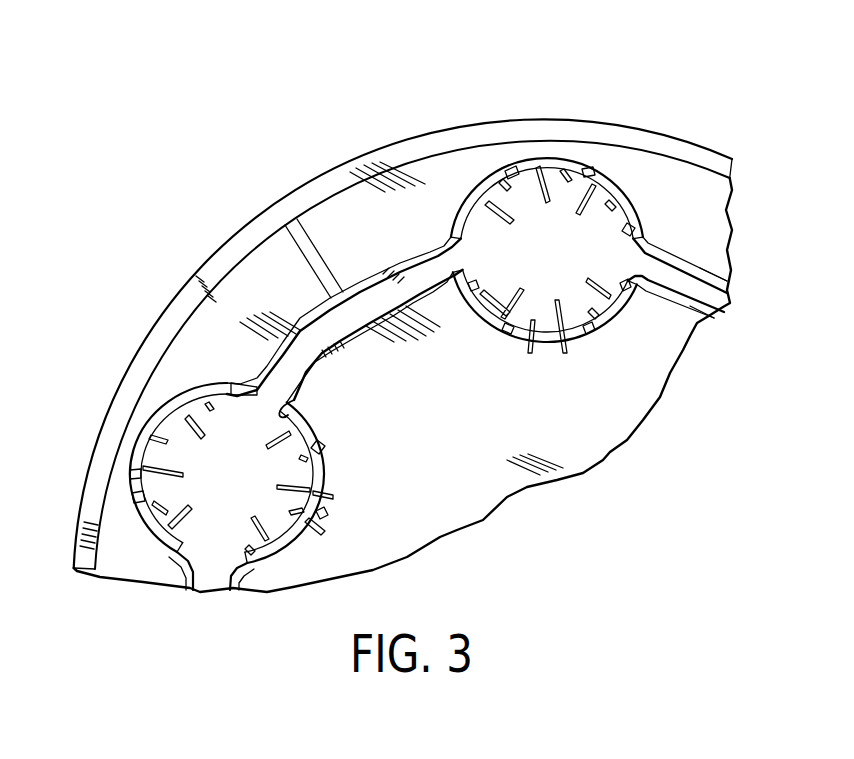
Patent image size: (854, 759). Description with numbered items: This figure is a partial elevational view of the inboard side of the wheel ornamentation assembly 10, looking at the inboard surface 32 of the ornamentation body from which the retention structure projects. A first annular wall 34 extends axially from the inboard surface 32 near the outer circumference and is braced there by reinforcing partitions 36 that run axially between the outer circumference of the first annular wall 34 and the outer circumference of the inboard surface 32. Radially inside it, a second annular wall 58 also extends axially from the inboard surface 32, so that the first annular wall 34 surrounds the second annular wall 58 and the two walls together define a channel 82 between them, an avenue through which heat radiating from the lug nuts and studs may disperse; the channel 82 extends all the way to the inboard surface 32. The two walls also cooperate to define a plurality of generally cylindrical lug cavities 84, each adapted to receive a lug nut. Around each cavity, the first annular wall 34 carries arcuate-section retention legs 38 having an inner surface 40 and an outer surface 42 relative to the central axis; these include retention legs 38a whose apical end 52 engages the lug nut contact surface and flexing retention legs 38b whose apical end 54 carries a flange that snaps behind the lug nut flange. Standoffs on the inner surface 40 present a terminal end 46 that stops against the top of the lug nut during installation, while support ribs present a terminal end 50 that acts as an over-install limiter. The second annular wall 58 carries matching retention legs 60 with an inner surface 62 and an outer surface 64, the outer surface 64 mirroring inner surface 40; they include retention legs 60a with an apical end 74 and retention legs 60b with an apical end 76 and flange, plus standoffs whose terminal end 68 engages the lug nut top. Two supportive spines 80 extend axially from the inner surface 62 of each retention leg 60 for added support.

The wheel ornamentation assembly 10 is at (95, 220).
The inboard surface 32 is at (208, 260).
The first annular wall 34 is at (733, 292).
The reinforcing partitions 36 is at (287, 232).
The retention legs 38 is at (487, 183).
The retention legs 38a is at (513, 170).
The retention legs 38b is at (455, 228).
The inner surface 40 is at (133, 468).
The outer surface 42 is at (170, 417).
The terminal end 46 is at (557, 168).
The terminal end 50 is at (587, 170).
The apical end 52 is at (130, 480).
The apical end 54 is at (196, 348).
The second annular wall 58 is at (680, 307).
The retention legs 60 is at (617, 328).
The retention legs 60a is at (512, 342).
The retention legs 60b is at (325, 456).
The inner surface 62 is at (440, 290).
The outer surface 64 is at (292, 401).
The terminal end 68 is at (287, 577).
The apical end 74 is at (325, 512).
The apical end 76 is at (316, 430).
The supportive spine 80 is at (530, 342).
The channel 82 is at (720, 300).
The lug cavities 84 is at (583, 240).